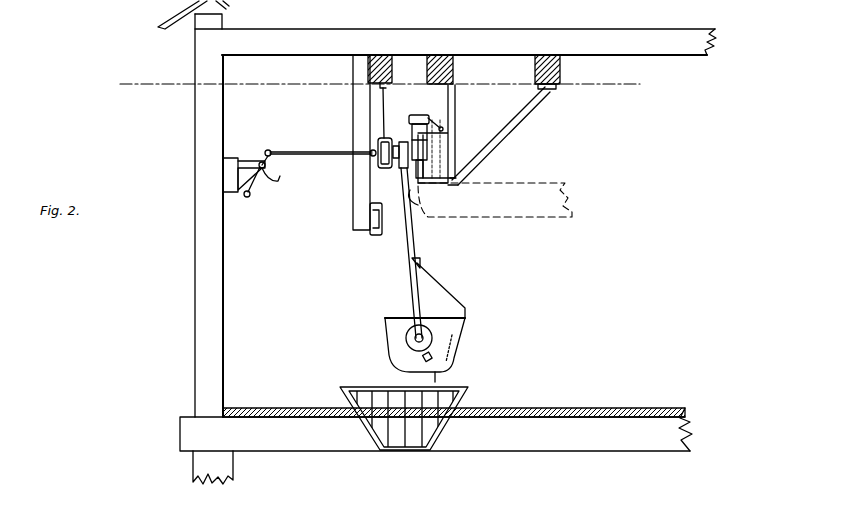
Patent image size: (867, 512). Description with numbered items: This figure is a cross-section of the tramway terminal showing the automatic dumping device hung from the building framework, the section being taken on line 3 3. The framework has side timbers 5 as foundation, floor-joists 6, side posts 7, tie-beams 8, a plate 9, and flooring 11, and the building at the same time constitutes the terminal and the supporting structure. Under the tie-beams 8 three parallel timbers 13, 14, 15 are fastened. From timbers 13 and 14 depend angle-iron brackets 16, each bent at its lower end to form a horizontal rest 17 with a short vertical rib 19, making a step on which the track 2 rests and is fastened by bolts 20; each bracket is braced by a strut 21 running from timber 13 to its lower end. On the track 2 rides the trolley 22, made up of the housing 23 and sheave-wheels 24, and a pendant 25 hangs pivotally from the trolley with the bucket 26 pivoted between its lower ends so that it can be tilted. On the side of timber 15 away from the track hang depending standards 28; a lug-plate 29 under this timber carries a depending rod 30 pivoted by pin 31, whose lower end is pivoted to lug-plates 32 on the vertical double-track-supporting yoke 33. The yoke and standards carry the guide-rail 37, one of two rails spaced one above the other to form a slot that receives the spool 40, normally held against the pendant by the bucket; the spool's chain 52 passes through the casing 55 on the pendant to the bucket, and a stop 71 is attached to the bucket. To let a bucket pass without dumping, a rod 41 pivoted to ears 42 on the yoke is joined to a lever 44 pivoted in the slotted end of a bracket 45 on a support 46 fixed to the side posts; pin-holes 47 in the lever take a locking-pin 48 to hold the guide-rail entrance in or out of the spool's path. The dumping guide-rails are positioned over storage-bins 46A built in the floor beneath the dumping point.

The track rope or rail 2 is at (419, 197).
The section line 3 is at (378, 85).
The side timbers 5 is at (233, 466).
The floor-joists 6 is at (525, 440).
The side studs or posts 7 is at (207, 290).
The tie-beams 8 is at (460, 27).
The plate 9 is at (222, 16).
The flooring 11 is at (282, 406).
The timber 13 is at (560, 69).
The timber 14 is at (453, 68).
The timber 15 is at (392, 68).
The angle-iron bracket 16 is at (455, 102).
The horizontal rest 17 is at (437, 185).
The vertical rib 19 is at (452, 168).
The bolts 20 is at (457, 183).
The strut 21 is at (505, 118).
The trolley 22 is at (410, 135).
The housing 23 is at (430, 130).
The sheave-wheels 24 is at (428, 142).
The pendant 25 is at (412, 245).
The bucket 26 is at (388, 334).
The depending standards 28 is at (360, 116).
The lug-plate 29 is at (366, 90).
The depending rod 30 is at (368, 103).
The pin or bolt 31 is at (386, 92).
The lug-plates 32 is at (368, 129).
The double-track-supporting yoke 33 is at (378, 160).
The guide-rail 37 is at (368, 180).
The spool 40 is at (400, 175).
The rod 41 is at (292, 150).
The ears 42 is at (368, 143).
The lever 44 is at (272, 170).
The bracket 45 is at (250, 160).
The support 46 is at (223, 163).
The storage-bins 46A is at (460, 392).
The pin-holes 47 is at (274, 185).
The locking-pin 48 is at (255, 197).
The chain 52 is at (452, 298).
The casing 55 is at (420, 263).
The stop 71 is at (452, 358).